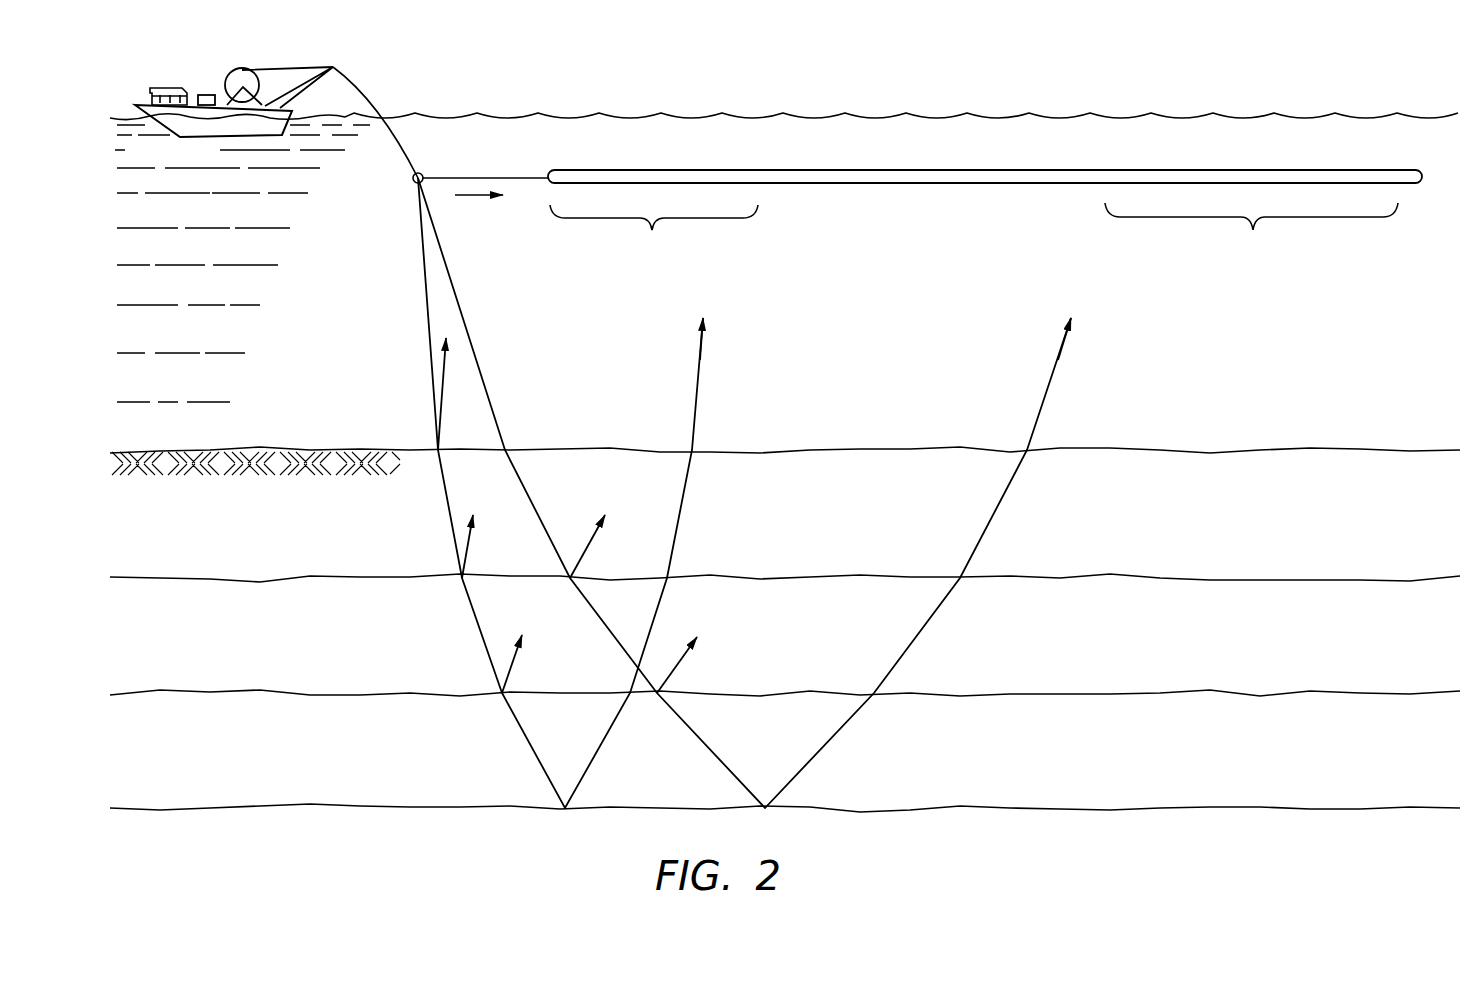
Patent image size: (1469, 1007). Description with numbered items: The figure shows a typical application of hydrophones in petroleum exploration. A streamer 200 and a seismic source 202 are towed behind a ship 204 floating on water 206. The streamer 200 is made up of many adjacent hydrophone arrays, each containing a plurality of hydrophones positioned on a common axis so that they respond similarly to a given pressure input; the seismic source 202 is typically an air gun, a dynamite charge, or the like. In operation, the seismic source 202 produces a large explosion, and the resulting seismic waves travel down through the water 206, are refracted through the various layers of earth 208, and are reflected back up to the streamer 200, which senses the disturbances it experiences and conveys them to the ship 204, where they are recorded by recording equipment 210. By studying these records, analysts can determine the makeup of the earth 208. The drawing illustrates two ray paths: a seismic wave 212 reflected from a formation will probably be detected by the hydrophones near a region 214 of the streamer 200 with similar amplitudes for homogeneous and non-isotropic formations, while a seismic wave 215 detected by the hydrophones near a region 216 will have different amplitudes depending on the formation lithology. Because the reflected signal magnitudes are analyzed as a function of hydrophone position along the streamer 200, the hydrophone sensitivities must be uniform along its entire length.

The streamer 200 is at (1299, 154).
The seismic source 202 is at (413, 178).
The ship 204 is at (213, 137).
The water 206 is at (203, 297).
The layers of earth 208 is at (1160, 652).
The recording equipment 210 is at (207, 95).
The seismic wave 212 is at (427, 330).
The region of the streamer 214 is at (654, 235).
The seismic wave 215 is at (455, 287).
The region of the streamer 216 is at (1251, 233).